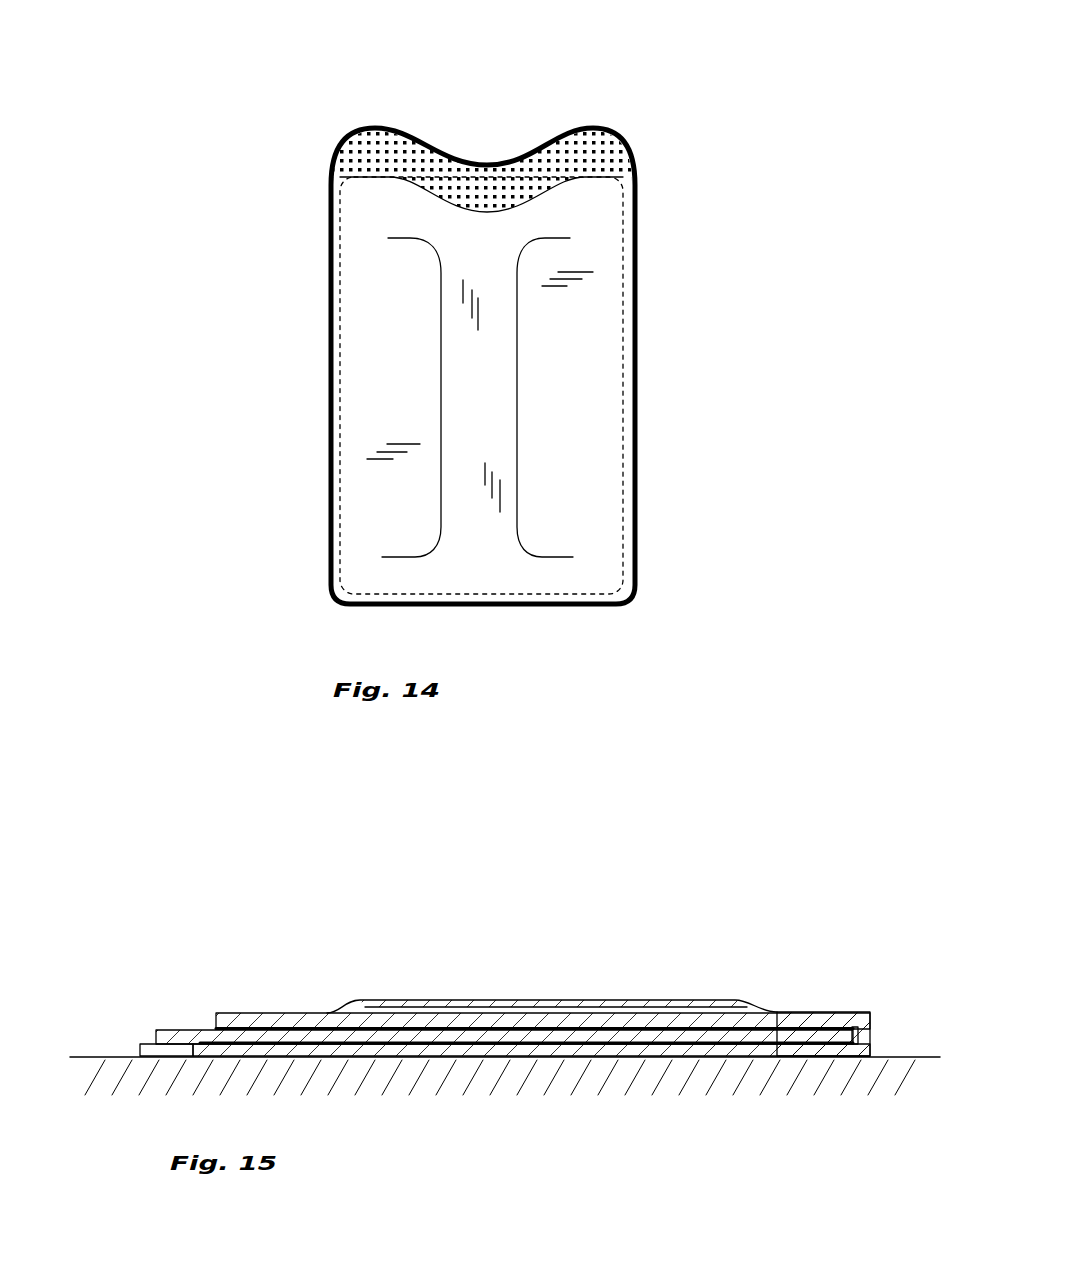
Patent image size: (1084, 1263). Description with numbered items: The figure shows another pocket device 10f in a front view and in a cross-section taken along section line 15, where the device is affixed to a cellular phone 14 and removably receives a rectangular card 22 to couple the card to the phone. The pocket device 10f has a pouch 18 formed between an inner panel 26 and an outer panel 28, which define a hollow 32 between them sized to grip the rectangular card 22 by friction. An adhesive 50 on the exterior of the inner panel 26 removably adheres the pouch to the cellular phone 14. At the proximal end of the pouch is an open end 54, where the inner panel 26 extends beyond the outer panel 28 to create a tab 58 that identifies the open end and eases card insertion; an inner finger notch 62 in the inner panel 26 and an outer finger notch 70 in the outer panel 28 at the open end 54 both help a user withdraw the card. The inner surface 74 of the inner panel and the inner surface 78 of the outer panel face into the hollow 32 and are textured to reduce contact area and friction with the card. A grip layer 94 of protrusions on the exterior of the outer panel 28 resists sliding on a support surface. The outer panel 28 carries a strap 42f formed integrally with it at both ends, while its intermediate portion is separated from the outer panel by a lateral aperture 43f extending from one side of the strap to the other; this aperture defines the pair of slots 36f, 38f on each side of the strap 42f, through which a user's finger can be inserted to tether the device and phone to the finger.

In FIG. 14, the pocket device 10f is at (657, 158).
In FIG. 15, the pocket device 10f is at (340, 983).
In FIG. 15, the cellular phone 14 is at (830, 1068).
In FIG. 14, the section line 15 is at (487, 75).
In FIG. 14, the pouch 18 is at (625, 253).
In FIG. 15, the rectangular card 22 is at (455, 1035).
In FIG. 14, the inner panel 26 is at (360, 150).
In FIG. 15, the inner panel 26 is at (603, 1047).
In FIG. 14, the outer panel 28 is at (347, 297).
In FIG. 15, the outer panel 28 is at (553, 1017).
In FIG. 15, the hollow 32 is at (713, 1025).
In FIG. 14, the slot 36f is at (438, 333).
In FIG. 14, the slot 38f is at (517, 342).
In FIG. 14, the strap 42f is at (485, 425).
In FIG. 15, the strap 42f is at (510, 998).
In FIG. 15, the lateral aperture 43f is at (615, 1010).
In FIG. 14, the adhesive 50 is at (637, 502).
In FIG. 15, the adhesive 50 is at (248, 1058).
In FIG. 14, the open end 54 is at (593, 173).
In FIG. 15, the open end 54 is at (223, 1017).
In FIG. 14, the tab 58 is at (392, 138).
In FIG. 14, the inner finger notch 62 is at (440, 152).
In FIG. 14, the outer finger notch 70 is at (485, 210).
In FIG. 15, the inner surface of inner panel 74 is at (385, 1047).
In FIG. 15, the inner surface of outer panel 78 is at (373, 1027).
In FIG. 14, the grip layer 94 is at (583, 212).